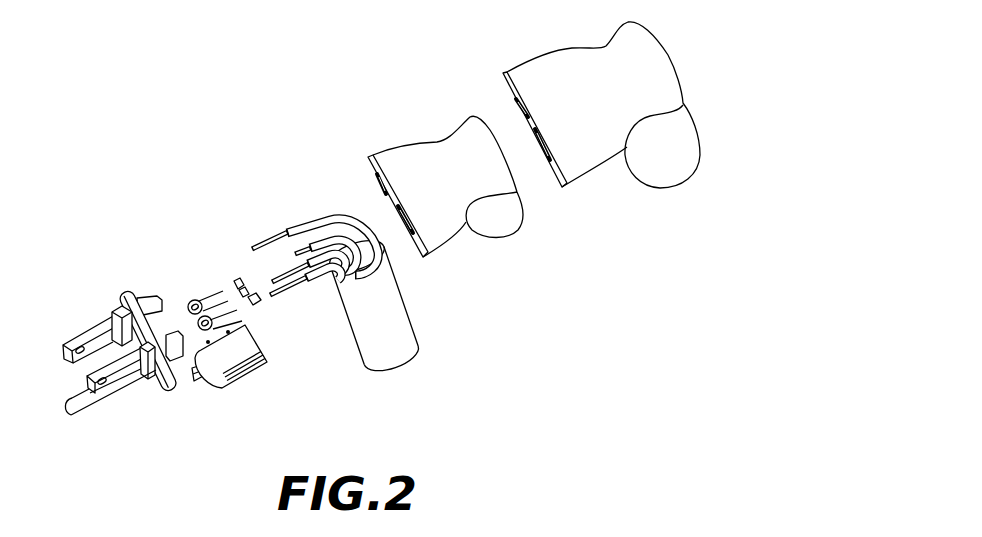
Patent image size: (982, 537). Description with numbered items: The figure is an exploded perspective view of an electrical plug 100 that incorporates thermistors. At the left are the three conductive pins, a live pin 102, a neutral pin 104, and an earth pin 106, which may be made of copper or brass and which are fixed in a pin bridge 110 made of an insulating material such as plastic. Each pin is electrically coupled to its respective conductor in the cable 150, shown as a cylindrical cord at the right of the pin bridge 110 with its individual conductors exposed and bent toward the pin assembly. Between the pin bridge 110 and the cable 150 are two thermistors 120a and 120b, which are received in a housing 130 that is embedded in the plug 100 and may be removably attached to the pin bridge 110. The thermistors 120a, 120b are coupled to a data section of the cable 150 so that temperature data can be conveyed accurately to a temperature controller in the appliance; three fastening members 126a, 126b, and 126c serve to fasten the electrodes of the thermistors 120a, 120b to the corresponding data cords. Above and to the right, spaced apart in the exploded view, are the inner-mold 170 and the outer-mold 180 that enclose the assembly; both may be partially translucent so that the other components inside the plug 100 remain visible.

The electrical plug 100 is at (117, 72).
The live pin 102 is at (86, 340).
The neutral pin 104 is at (80, 377).
The earth pin 106 is at (84, 402).
The pin bridge 110 is at (177, 390).
The thermistor 120a is at (192, 302).
The thermistor 120b is at (196, 320).
The fastening member 126a is at (236, 278).
The fastening member 126b is at (247, 294).
The fastening member 126c is at (258, 306).
The housing 130 is at (240, 373).
The cable 150 is at (407, 333).
The inner-mold 170 is at (395, 153).
The outer-mold 180 is at (537, 70).